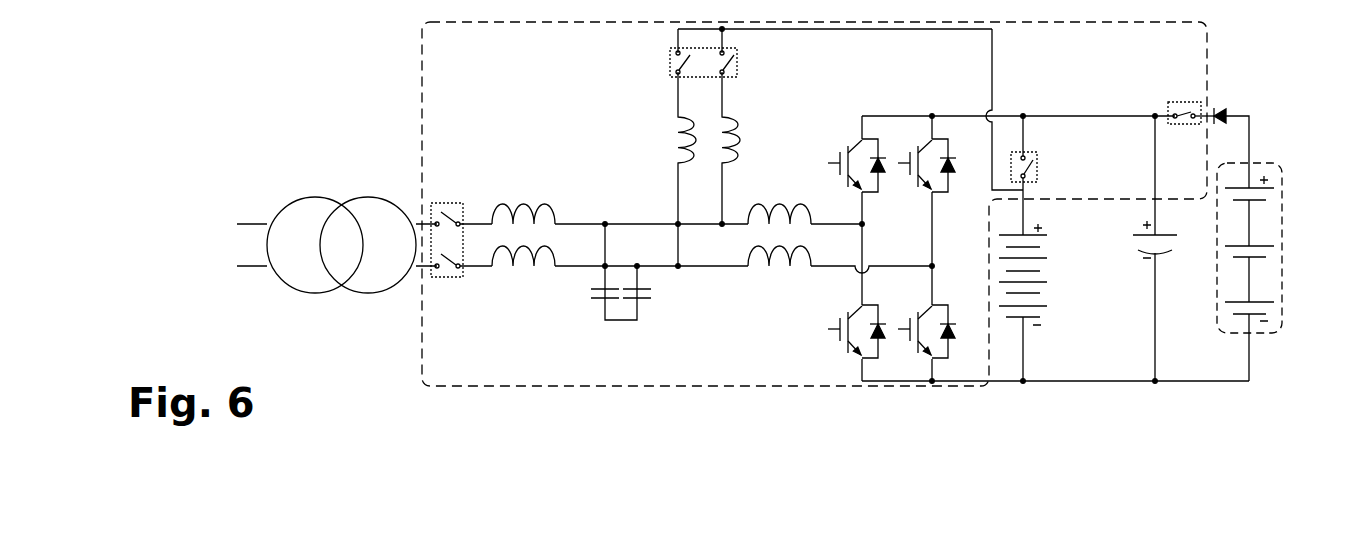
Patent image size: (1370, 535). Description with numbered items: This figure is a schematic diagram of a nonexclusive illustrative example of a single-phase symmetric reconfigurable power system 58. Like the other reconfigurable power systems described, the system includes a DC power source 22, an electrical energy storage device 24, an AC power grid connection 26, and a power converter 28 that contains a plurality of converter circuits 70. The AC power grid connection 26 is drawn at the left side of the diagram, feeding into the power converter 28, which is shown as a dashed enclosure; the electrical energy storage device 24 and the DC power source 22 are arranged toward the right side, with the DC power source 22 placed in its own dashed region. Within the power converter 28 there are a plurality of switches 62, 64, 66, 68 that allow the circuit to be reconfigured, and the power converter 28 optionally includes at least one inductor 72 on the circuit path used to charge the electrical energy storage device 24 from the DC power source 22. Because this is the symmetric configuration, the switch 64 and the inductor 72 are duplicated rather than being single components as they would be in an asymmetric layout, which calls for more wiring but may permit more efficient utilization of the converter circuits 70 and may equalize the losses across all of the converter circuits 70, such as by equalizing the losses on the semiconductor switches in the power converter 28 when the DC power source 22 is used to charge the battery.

The single-phase symmetric reconfigurable power system 58 is at (254, 82).
The AC power grid connection 26 is at (286, 170).
The power converter 28 is at (422, 98).
The switch 66 is at (447, 277).
The switch 64 is at (670, 62).
The inductor 72 is at (668, 138).
The converter circuits 70 is at (819, 313).
The switch 62 is at (1037, 152).
The electrical energy storage device 24 is at (1059, 306).
The switch 68 is at (1186, 125).
The DC power source 22 is at (1282, 237).